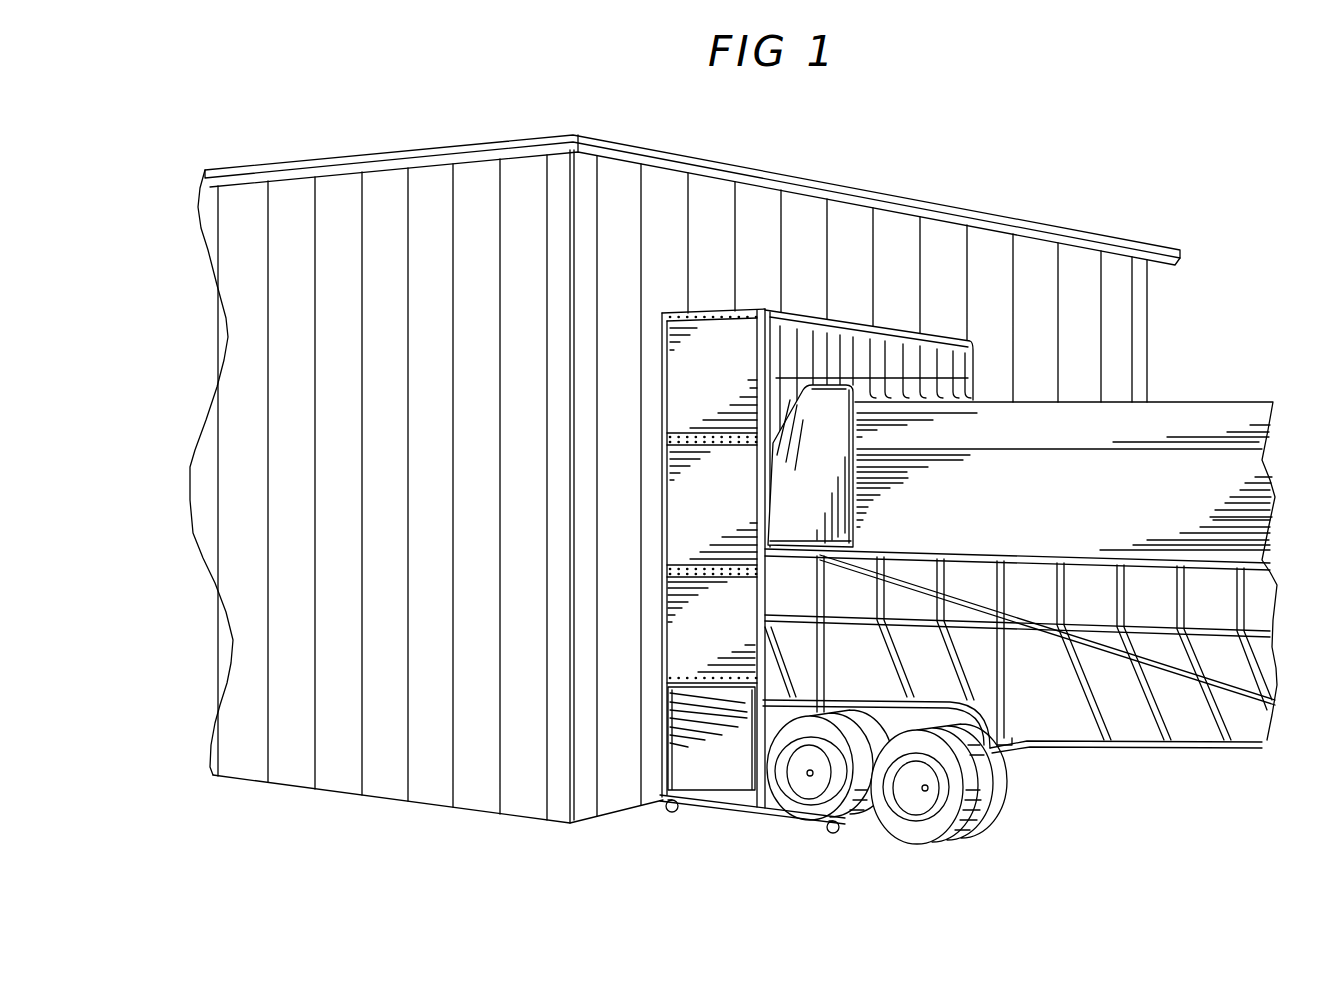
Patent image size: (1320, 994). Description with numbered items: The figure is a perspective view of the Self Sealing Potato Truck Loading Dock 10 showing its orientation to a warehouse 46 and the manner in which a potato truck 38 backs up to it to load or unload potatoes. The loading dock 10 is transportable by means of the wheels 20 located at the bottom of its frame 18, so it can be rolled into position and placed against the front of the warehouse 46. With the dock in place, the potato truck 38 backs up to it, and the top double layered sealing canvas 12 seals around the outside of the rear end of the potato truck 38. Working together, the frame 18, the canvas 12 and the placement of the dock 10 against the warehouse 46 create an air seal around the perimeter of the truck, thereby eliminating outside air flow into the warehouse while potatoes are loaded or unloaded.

The Self Sealing Potato Truck Loading Dock 10 is at (713, 512).
The top double layered sealing canvas 12 is at (817, 347).
The frame 18 is at (653, 727).
The wheels 20 is at (812, 830).
The potato truck 38 is at (1060, 691).
The warehouse 46 is at (987, 270).